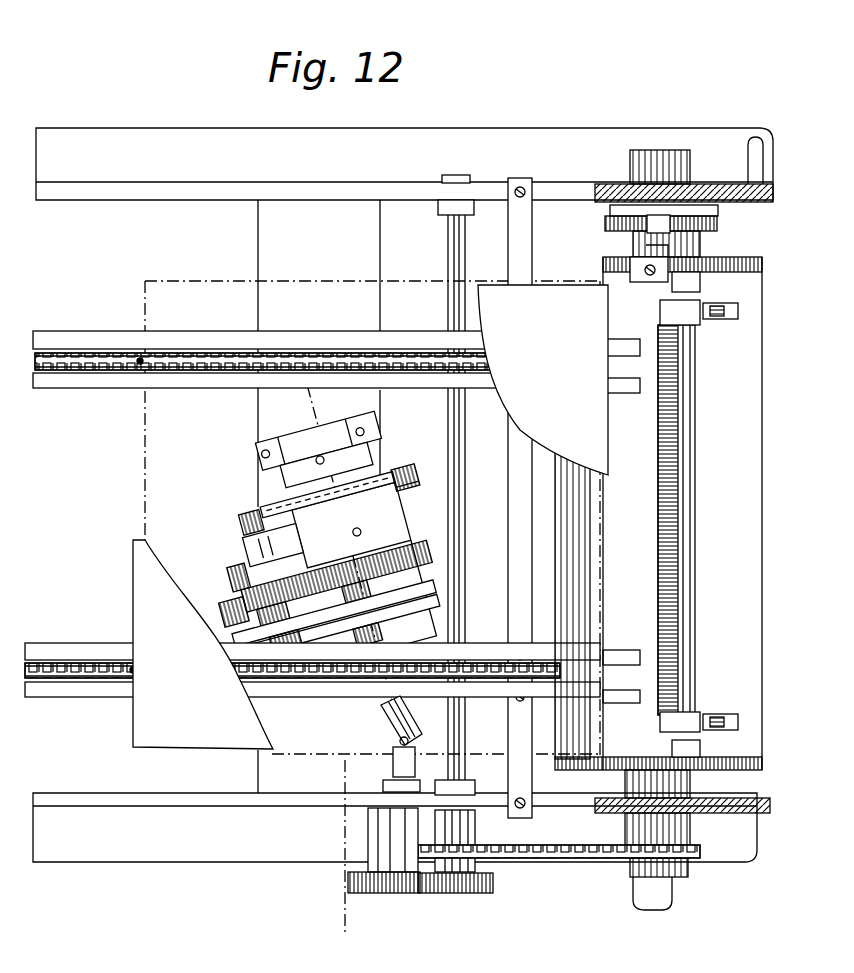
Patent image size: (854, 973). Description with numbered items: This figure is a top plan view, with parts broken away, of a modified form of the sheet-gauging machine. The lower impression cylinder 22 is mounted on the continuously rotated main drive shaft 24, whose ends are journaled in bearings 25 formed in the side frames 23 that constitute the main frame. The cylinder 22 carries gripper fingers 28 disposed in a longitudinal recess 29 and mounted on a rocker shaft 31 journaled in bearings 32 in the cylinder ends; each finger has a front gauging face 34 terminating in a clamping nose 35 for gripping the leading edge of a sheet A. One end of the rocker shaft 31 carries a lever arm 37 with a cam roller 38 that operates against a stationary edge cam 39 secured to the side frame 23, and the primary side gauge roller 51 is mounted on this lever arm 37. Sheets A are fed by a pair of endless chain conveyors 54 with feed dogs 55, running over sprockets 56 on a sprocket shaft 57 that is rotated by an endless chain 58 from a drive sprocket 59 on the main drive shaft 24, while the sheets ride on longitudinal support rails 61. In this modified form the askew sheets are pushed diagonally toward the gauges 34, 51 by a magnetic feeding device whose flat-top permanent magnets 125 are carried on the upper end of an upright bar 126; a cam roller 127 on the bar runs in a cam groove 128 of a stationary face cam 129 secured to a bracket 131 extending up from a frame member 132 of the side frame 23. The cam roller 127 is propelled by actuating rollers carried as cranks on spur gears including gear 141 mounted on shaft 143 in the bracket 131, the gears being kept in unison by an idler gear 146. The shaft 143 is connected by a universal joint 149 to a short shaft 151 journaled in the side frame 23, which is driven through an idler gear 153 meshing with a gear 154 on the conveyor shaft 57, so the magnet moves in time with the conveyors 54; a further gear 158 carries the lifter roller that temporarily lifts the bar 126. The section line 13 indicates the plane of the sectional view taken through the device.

The impression cylinder 22 is at (640, 551).
The side frames 23 is at (718, 152).
The main drive shaft 24 is at (672, 892).
The bearings 25 is at (636, 158).
The gripper fingers 28 is at (700, 322).
The longitudinal recess 29 is at (748, 502).
The rocker shaft 31 is at (690, 475).
The bearings 32 is at (695, 282).
The front gauging face 34 is at (660, 314).
The clamping nose 35 is at (662, 726).
The lever arm 37 is at (640, 252).
The cam roller 38 is at (662, 224).
The stationary edge cam 39 is at (622, 215).
The primary side gauge roller 51 is at (645, 278).
The endless chain conveyors 54 is at (208, 372).
The feed dogs 55 is at (140, 356).
The sprockets 56 is at (445, 355).
The sprocket shaft 57 is at (448, 244).
The endless chain 58 is at (558, 858).
The drive sprocket 59 is at (632, 860).
The support rails 61 is at (90, 340).
The permanent magnets 125 is at (234, 532).
The upright bar 126 is at (249, 551).
The cam roller 127 is at (304, 469).
The cam groove 128 is at (415, 457).
The stationary face cam 129 is at (429, 499).
The bracket 131 is at (391, 566).
The frame member 132 is at (332, 243).
The spur gear 141 is at (368, 574).
The gear shaft 143 is at (342, 644).
The idler gear 146 is at (281, 609).
The universal joint 149 is at (392, 725).
The short shaft 151 is at (398, 893).
The idler gear 153 is at (348, 886).
The gear 154 is at (483, 893).
The gear 158 is at (222, 587).
The section line 13 is at (330, 410).
The sheet A is at (140, 728).